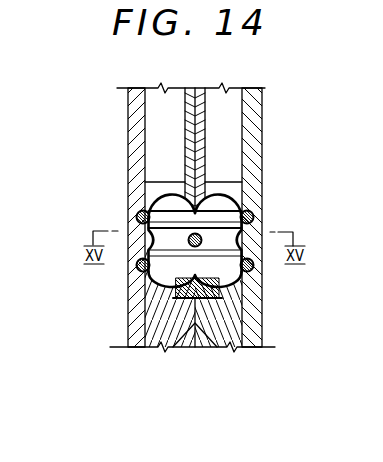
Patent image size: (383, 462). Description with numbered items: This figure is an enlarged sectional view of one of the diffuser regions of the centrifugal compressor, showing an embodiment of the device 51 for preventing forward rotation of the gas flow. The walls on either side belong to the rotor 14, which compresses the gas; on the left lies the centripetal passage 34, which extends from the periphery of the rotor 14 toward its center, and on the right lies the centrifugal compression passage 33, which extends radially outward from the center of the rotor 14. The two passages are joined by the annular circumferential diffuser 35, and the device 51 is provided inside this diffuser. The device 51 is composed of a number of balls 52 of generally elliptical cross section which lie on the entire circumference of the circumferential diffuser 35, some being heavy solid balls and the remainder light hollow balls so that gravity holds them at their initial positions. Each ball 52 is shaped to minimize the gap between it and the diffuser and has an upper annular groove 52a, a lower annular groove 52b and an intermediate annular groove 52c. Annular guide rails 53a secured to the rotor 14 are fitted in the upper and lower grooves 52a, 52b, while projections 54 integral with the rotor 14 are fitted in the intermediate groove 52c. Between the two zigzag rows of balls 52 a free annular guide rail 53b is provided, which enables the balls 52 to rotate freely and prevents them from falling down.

The rotor 14 is at (174, 193).
The centrifugal compression passage 33 is at (233, 146).
The centripetal passage 34 is at (157, 145).
The circumferential diffuser 35 is at (199, 337).
The device for preventing forward rotation of the gas flow 51 is at (224, 312).
The balls 52 is at (206, 255).
The upper annular groove 52a is at (165, 212).
The lower annular groove 52b is at (146, 290).
The intermediate annular groove 52c is at (140, 254).
The annular guide rails 53a is at (138, 210).
The free annular guide rail 53b is at (166, 327).
The projections 54 is at (148, 236).